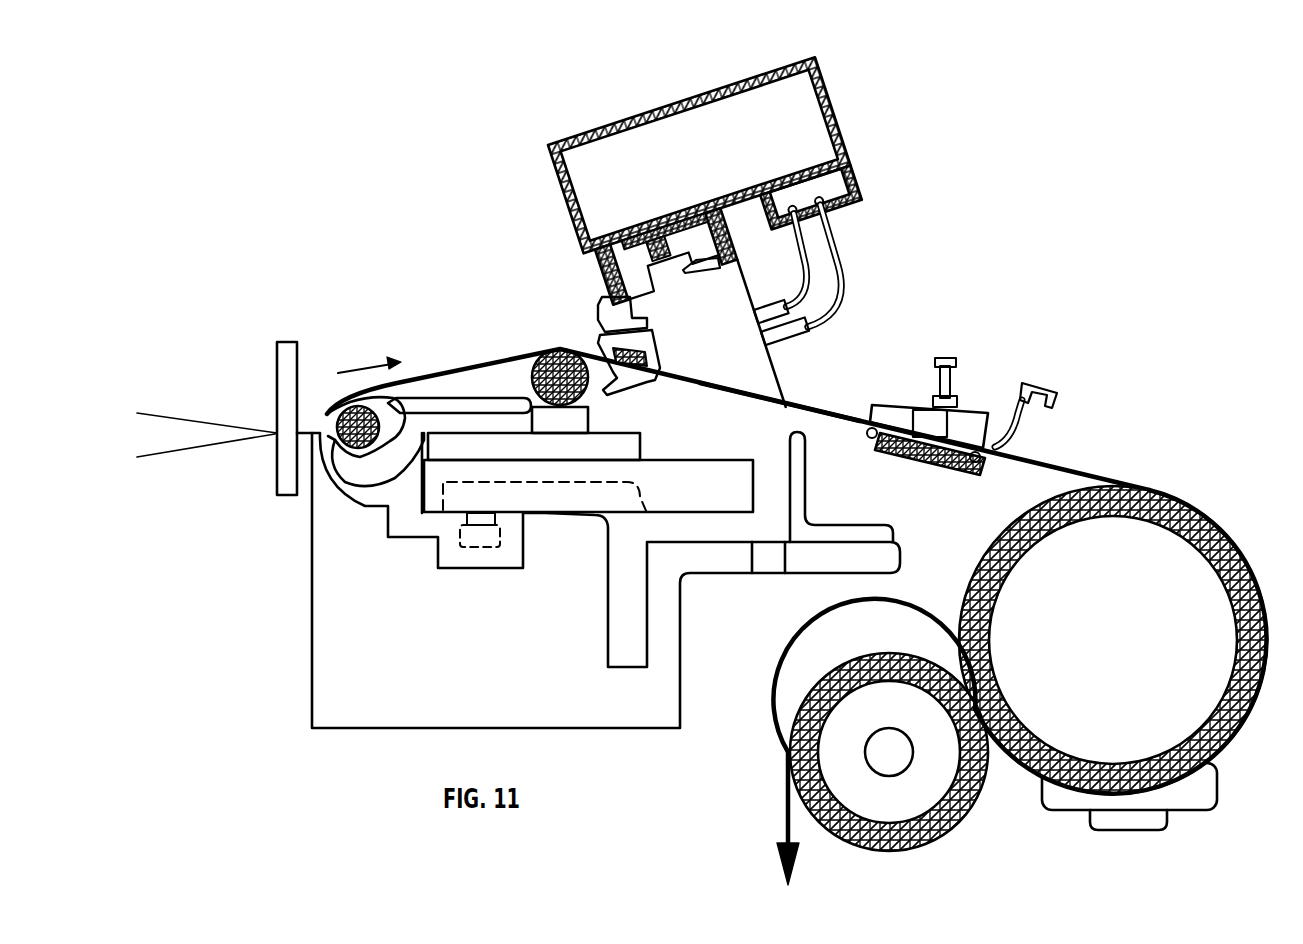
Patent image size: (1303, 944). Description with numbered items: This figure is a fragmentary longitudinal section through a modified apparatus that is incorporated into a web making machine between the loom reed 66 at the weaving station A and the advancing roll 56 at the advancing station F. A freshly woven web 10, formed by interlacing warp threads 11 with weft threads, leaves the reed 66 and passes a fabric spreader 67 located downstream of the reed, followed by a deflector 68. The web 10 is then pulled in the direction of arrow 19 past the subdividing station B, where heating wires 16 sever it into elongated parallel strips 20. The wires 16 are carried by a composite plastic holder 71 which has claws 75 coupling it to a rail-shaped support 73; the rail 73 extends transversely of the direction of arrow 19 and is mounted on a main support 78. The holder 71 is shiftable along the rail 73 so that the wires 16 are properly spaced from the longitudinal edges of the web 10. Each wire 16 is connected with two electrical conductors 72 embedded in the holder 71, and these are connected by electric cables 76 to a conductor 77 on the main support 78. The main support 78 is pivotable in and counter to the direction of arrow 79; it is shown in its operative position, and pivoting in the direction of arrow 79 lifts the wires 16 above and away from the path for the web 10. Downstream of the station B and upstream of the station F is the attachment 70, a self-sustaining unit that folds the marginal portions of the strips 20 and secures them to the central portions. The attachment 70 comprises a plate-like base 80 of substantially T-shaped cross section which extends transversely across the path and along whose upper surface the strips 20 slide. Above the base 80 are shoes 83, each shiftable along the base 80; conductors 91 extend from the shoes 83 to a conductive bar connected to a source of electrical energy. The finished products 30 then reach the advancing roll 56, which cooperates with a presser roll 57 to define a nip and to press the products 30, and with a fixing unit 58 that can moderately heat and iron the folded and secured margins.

The web 10 is at (468, 360).
The warp threads 11 is at (188, 423).
The heating wires 16 is at (645, 346).
The arrow 19 is at (360, 370).
The strips 20 is at (800, 406).
The finished products 30 is at (786, 812).
The advancing roll 56 is at (1000, 530).
The presser roll 57 is at (947, 824).
The fixing unit 58 is at (1193, 787).
The loom reed 66 is at (277, 357).
The fabric spreader 67 is at (330, 437).
The deflector 68 is at (547, 348).
The attachment 70 is at (971, 396).
The holder 71 is at (697, 325).
The electrical conductors 72 is at (781, 321).
The rail-shaped support 73 is at (611, 275).
The claws 75 is at (697, 260).
The electric cables 76 is at (808, 268).
The conductor 77 is at (810, 198).
The main support 78 is at (699, 155).
The arrow 79 is at (721, 243).
The base 80 is at (905, 455).
The shoes 83 is at (957, 403).
The conductors 91 is at (1032, 436).
The weaving station A is at (290, 328).
The subdividing station B is at (592, 335).
The advancing station F is at (1240, 525).